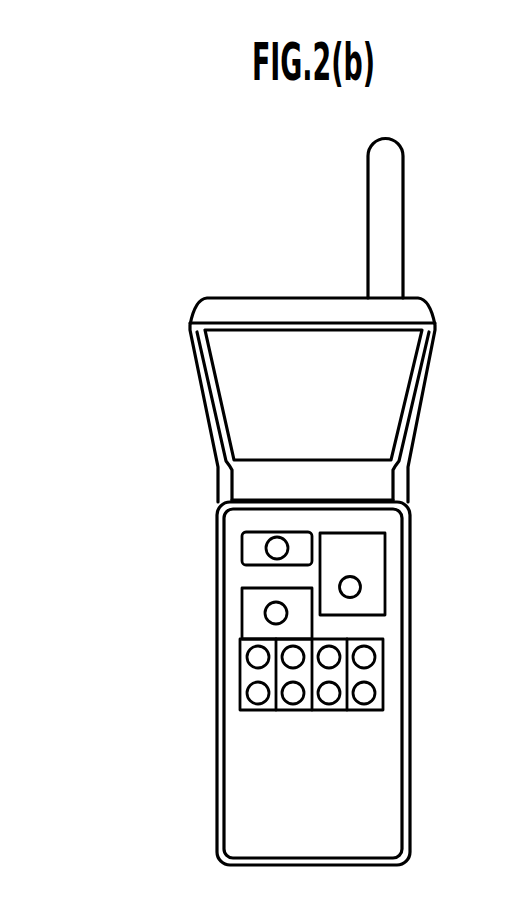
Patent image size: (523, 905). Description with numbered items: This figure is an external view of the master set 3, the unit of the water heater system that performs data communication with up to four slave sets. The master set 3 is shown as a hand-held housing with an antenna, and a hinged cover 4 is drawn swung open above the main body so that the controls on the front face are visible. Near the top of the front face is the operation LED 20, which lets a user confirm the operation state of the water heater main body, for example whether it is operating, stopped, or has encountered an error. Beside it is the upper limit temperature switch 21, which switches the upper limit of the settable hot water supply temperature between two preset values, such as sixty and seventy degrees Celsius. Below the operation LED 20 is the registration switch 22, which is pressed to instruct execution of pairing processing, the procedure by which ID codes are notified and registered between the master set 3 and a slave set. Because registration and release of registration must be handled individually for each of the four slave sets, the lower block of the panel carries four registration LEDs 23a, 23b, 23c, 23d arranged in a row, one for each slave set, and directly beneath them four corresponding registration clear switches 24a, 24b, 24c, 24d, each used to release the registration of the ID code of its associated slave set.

The master set 3 is at (410, 523).
The cover 4 is at (427, 381).
The operation LED 20 is at (266, 548).
The upper limit temperature switch 21 is at (361, 587).
The registration switch 22 is at (265, 613).
The registration LED 23a is at (247, 660).
The registration LED 23b is at (287, 646).
The registration LED 23c is at (329, 645).
The registration LED 23d is at (376, 658).
The registration clear switch 24a is at (247, 695).
The registration clear switch 24b is at (292, 705).
The registration clear switch 24c is at (330, 705).
The registration clear switch 24d is at (376, 695).